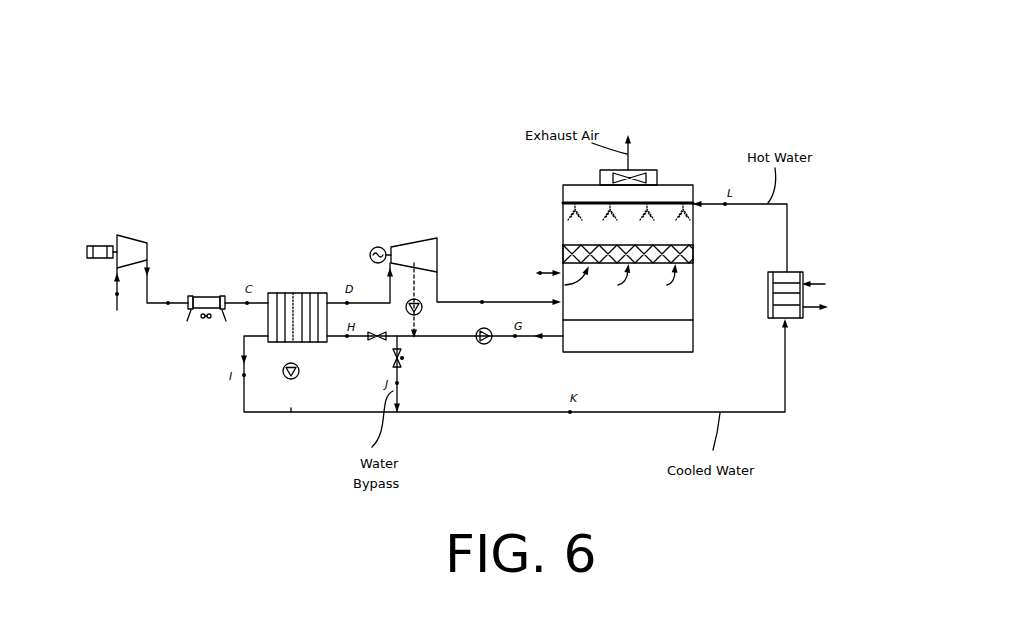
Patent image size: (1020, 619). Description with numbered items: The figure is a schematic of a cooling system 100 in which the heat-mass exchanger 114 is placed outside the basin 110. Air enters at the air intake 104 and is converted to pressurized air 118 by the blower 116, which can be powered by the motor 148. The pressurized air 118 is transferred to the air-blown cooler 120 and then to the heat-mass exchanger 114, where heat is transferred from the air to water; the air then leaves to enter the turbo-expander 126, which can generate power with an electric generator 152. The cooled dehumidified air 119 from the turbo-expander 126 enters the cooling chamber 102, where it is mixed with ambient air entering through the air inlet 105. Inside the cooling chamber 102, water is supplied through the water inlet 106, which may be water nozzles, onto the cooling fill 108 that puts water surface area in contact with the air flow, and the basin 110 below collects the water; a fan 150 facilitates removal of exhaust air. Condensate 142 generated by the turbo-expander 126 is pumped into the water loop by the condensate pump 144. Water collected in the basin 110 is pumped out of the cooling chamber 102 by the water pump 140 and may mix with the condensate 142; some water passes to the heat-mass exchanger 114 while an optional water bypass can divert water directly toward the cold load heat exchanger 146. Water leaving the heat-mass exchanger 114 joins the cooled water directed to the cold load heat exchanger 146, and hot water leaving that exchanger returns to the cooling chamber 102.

The cooling system 100 is at (549, 84).
The cooling chamber 102 is at (695, 305).
The air intake 104 is at (115, 306).
The air inlet 105 is at (537, 273).
The water inlet 106 is at (570, 210).
The cooling fill 108 is at (693, 255).
The basin 110 is at (627, 343).
The heat-mass exchanger 114 is at (297, 293).
The blower 116 is at (132, 234).
The pressurized air 118 is at (156, 303).
The cooled dehumidified air 119 is at (467, 302).
The air-blown cooler 120 is at (205, 297).
The turbo-expander 126 is at (412, 243).
The water pump 140 is at (483, 346).
The condensate 142 is at (290, 389).
The condensate pump 144 is at (419, 285).
The cold load heat exchanger 146 is at (802, 272).
The motor 148 is at (100, 245).
The fan 150 is at (650, 170).
The electric generator 152 is at (372, 250).